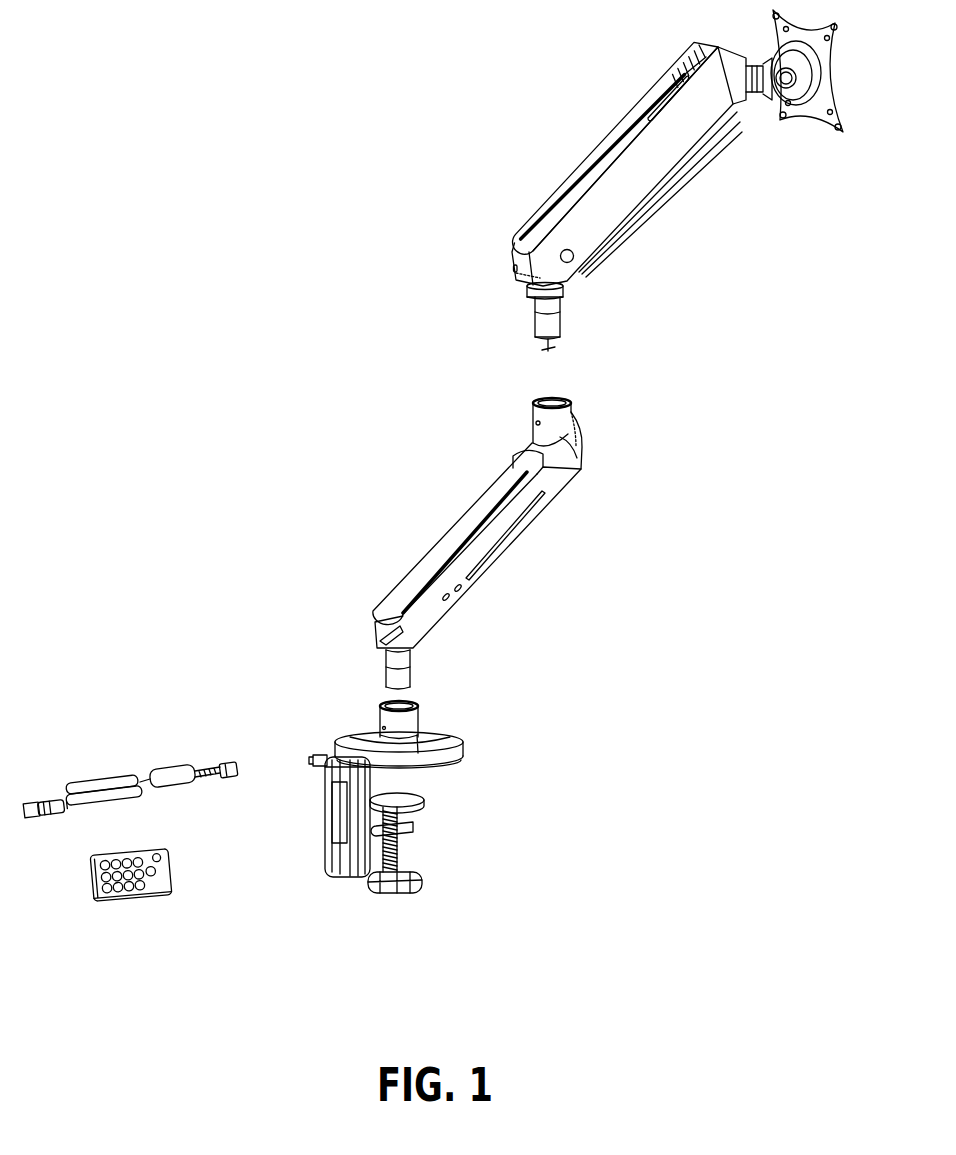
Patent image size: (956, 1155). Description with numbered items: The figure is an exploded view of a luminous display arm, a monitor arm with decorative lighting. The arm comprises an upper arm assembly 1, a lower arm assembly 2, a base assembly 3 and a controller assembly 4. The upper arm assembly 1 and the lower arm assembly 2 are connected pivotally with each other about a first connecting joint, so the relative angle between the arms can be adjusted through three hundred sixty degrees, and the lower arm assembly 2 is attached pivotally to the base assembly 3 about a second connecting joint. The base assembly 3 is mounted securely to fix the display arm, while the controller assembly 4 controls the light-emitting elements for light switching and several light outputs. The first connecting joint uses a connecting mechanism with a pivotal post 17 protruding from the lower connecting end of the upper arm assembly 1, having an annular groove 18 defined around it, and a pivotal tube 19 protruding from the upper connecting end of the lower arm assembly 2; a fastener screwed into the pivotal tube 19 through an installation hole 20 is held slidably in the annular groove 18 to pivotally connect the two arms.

The upper arm assembly 1 is at (560, 186).
The lower arm assembly 2 is at (464, 509).
The base assembly 3 is at (348, 737).
The controller assembly 4 is at (165, 766).
The pivotal post 17 is at (552, 325).
The annular groove 18 is at (537, 310).
The pivotal tube 19 is at (553, 415).
The installation hole 20 is at (536, 422).